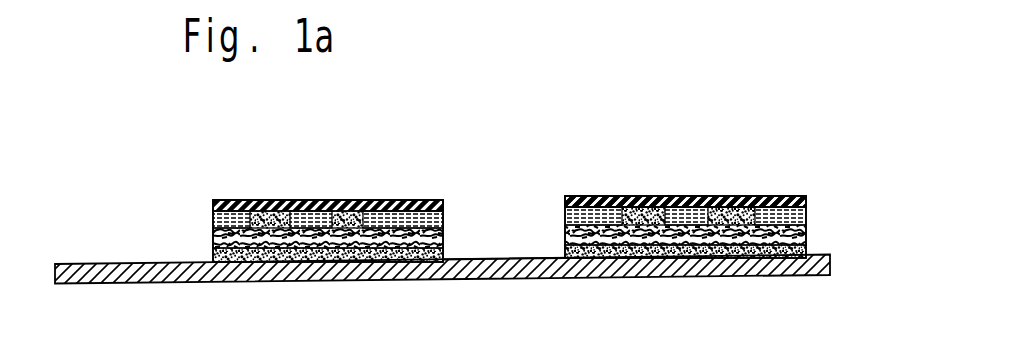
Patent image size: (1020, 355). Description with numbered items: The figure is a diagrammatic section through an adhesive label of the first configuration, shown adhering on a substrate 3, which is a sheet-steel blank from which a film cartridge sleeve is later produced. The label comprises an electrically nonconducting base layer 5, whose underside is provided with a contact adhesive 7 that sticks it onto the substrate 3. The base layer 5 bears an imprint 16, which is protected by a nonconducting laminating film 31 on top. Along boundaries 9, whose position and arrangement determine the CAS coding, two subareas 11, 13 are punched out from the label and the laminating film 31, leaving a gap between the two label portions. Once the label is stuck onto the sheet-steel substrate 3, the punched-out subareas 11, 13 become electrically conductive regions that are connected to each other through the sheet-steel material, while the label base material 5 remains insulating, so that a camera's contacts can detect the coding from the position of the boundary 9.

The substrate 3 is at (687, 262).
The base layer 5 is at (806, 232).
The contact adhesive 7 is at (806, 250).
The boundaries 9 is at (427, 145).
The subarea 11 is at (504, 212).
The subarea 13 is at (496, 124).
The imprint 16 is at (806, 214).
The laminating film 31 is at (781, 196).